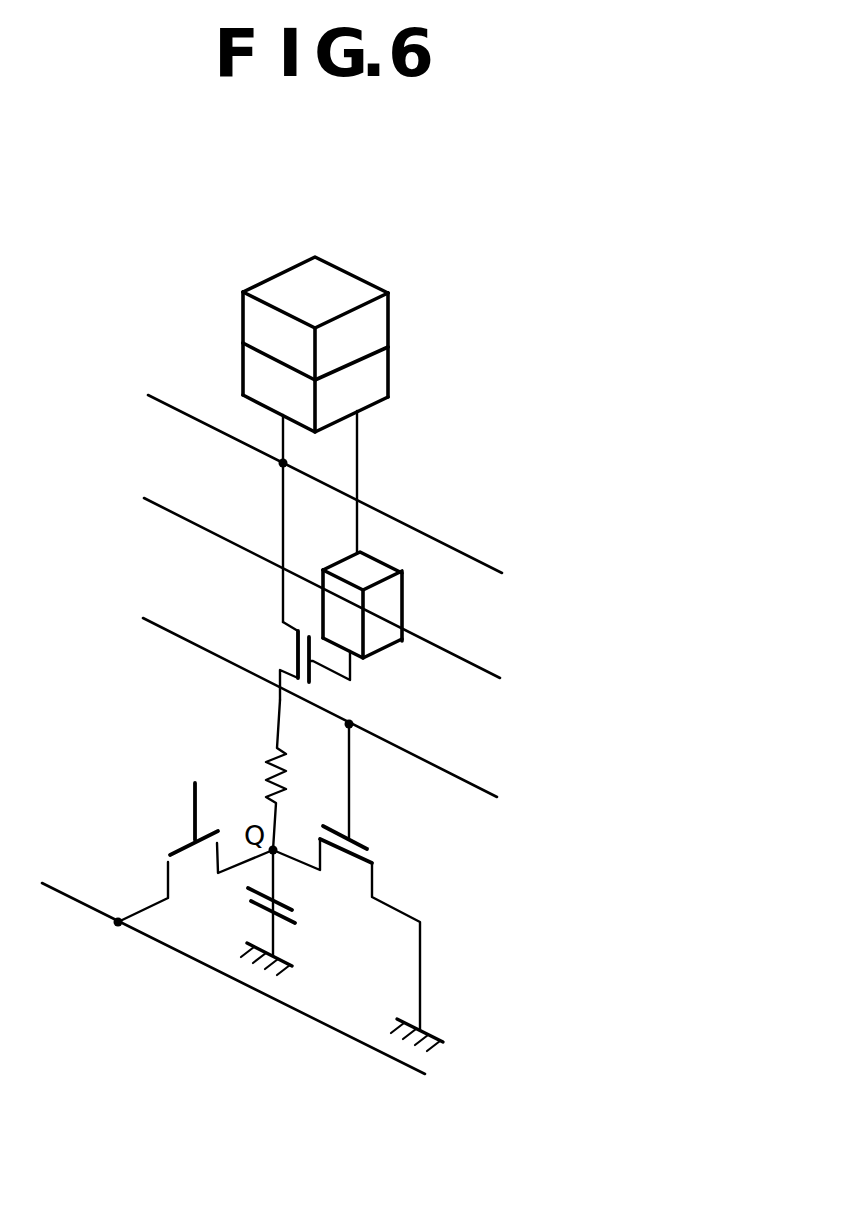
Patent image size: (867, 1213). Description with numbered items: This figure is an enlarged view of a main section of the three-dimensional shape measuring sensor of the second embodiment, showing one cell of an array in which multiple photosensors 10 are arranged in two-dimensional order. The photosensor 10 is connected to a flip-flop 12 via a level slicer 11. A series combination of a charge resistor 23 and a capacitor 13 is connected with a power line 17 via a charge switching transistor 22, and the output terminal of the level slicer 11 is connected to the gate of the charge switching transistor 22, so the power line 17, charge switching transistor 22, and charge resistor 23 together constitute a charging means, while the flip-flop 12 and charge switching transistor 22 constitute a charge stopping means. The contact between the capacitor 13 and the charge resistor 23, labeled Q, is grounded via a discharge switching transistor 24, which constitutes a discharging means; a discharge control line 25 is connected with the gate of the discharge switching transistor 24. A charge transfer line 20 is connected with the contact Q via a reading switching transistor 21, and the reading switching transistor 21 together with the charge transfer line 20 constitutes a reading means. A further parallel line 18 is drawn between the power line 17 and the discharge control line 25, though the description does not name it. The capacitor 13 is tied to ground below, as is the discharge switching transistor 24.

The photosensor 10 is at (377, 326).
The level slicer 11 is at (382, 377).
The flip-flop 12 is at (390, 592).
The capacitor 13 is at (295, 915).
The power line 17 is at (457, 545).
The signal line 18 is at (478, 665).
The charge transfer line 20 is at (232, 978).
The reading switching transistor 21 is at (168, 855).
The charge switching transistor 22 is at (293, 655).
The charge resistor 23 is at (268, 770).
The discharge switching transistor 24 is at (368, 855).
The discharge control line 25 is at (435, 763).